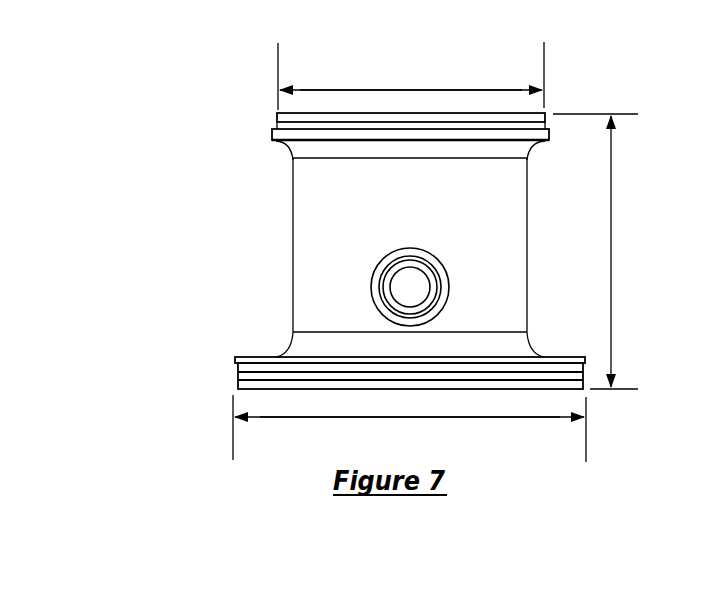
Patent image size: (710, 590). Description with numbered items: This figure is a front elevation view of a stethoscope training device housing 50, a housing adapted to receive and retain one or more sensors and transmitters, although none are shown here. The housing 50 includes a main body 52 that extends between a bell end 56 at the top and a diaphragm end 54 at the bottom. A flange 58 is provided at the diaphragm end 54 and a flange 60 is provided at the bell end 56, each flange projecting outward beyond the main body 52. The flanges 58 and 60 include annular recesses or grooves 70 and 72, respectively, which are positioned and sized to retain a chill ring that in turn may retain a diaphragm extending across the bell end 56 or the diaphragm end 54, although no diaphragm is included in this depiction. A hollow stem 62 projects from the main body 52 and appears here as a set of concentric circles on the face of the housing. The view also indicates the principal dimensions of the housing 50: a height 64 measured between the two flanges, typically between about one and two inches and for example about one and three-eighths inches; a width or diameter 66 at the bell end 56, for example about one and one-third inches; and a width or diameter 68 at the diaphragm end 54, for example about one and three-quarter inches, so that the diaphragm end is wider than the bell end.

The stethoscope training device housing 50 is at (404, 214).
The main body 52 is at (327, 218).
The diaphragm end 54 is at (484, 440).
The bell end 56 is at (440, 78).
The flange 58 is at (277, 117).
The flange 60 is at (237, 362).
The hollow stem 62 is at (428, 250).
The height 64 is at (613, 212).
The width or diameter 66 is at (383, 90).
The width or diameter 68 is at (300, 417).
The annular recess or groove 70 is at (280, 125).
The annular recess or groove 72 is at (240, 377).